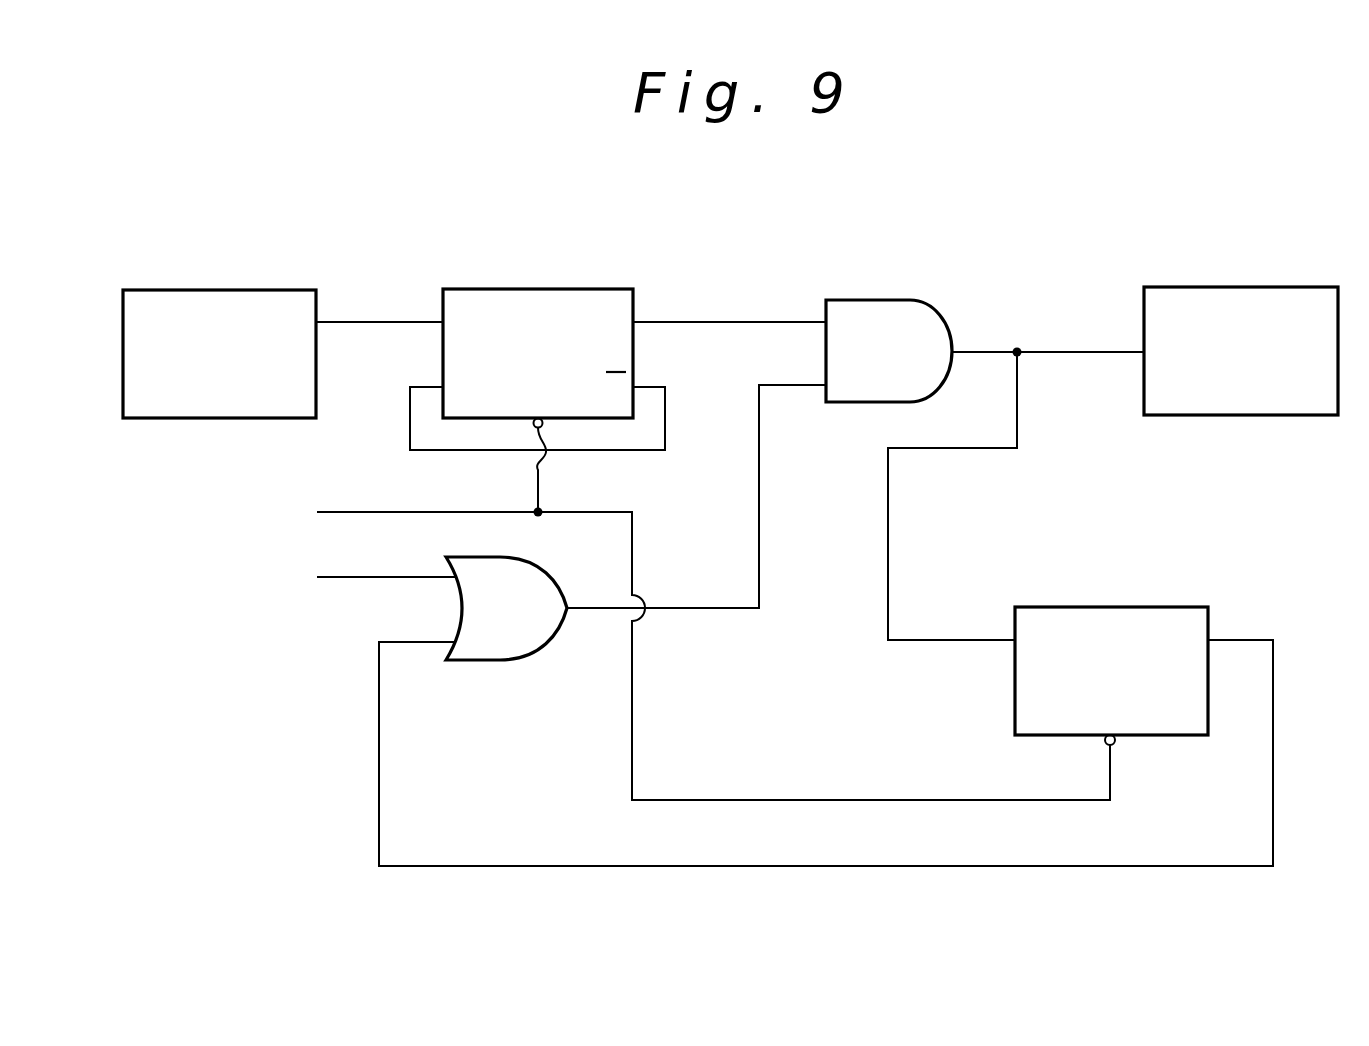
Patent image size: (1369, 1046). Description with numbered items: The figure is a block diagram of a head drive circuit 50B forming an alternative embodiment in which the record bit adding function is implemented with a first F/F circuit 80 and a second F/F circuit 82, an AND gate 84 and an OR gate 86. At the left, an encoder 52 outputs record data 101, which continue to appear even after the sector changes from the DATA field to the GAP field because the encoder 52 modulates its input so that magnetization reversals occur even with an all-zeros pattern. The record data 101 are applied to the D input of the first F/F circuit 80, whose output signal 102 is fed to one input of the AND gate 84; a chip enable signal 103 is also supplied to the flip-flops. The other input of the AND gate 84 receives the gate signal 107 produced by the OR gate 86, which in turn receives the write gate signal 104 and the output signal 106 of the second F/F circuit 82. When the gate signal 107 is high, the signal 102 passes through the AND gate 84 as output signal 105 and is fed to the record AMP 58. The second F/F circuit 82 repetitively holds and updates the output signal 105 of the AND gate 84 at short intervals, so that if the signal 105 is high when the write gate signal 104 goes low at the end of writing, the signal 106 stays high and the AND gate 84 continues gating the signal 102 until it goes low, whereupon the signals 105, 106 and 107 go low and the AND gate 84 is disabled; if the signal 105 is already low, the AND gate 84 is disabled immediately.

The head drive circuit 50B is at (1153, 200).
The encoder 52 is at (262, 290).
The record amplifier 58 is at (1290, 287).
The first flip-flop circuit 80 is at (594, 289).
The second flip-flop circuit 82 is at (1115, 607).
The AND gate 84 is at (912, 300).
The OR gate 86 is at (505, 665).
The record data 101 is at (393, 322).
The output signal of the first F/F circuit 102 is at (716, 322).
The chip enable signal 103 is at (345, 512).
The write gate signal 104 is at (350, 577).
The output signal of the AND gate 105 is at (1077, 352).
The output signal of the second F/F circuit 106 is at (815, 865).
The gate signal 107 is at (760, 548).